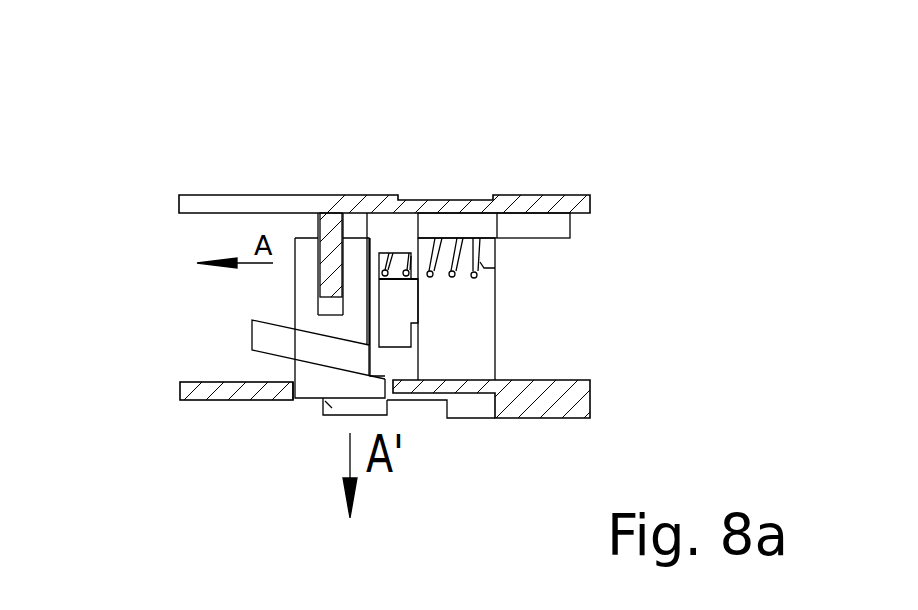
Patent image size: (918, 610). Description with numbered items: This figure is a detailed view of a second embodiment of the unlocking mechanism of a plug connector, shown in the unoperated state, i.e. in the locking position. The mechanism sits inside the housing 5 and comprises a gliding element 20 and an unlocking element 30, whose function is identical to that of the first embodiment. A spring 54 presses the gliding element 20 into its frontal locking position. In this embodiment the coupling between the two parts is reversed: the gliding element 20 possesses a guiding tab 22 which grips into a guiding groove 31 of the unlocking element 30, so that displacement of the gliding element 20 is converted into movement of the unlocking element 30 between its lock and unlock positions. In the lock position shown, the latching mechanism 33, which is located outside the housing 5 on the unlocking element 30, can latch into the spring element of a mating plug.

The housing 5 is at (205, 203).
The gliding element 20 is at (403, 240).
The guiding tab 22 is at (290, 345).
The unlocking element 30 is at (347, 387).
The guiding groove 31 is at (345, 340).
The latching mechanism 33 is at (332, 405).
The spring 54 is at (438, 245).